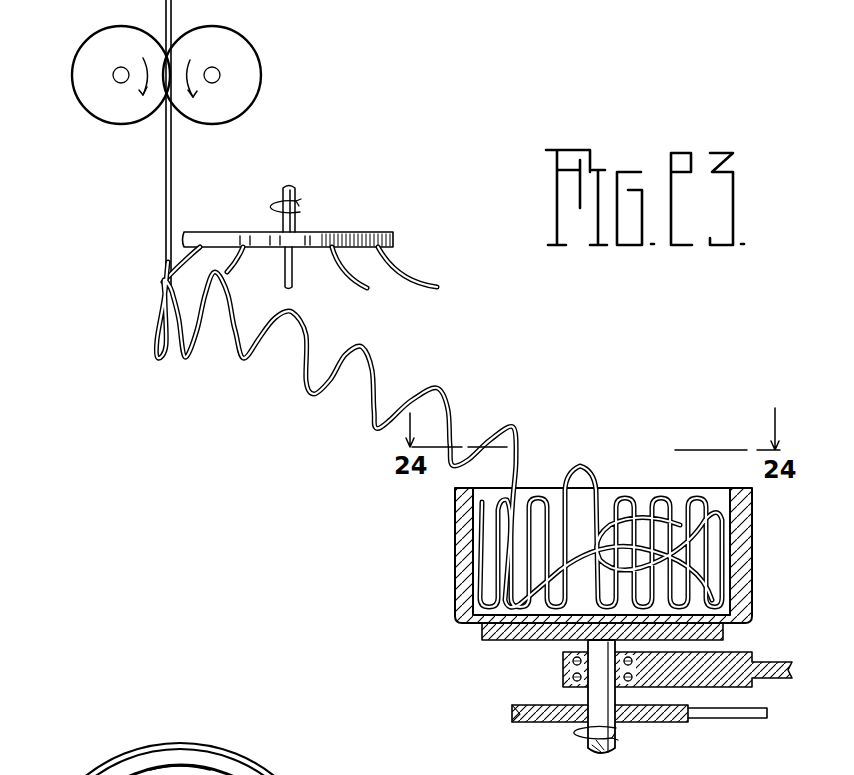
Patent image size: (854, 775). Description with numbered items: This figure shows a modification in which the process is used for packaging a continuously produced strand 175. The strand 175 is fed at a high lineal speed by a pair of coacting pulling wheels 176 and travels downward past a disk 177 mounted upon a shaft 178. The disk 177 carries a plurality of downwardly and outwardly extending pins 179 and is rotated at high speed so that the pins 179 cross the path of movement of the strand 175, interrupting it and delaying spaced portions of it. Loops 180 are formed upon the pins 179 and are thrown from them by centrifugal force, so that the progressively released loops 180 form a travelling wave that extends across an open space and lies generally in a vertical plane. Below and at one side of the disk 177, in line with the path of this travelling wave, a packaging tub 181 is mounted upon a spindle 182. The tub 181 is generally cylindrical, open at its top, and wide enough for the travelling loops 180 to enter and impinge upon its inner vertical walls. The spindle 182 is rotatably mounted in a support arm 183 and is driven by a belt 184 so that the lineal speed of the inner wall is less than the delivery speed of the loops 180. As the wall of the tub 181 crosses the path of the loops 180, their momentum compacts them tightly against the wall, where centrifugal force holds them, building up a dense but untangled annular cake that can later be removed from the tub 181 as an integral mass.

The continuously produced strand 175 is at (172, 25).
The coacting pulling wheels 176 is at (259, 95).
The disk 177 is at (362, 235).
The shaft 178 is at (296, 192).
The pins 179 is at (142, 281).
The loops 180 is at (194, 364).
The packaging tub 181 is at (752, 576).
The spindle 182 is at (586, 742).
The support arm 183 is at (735, 656).
The belt 184 is at (728, 718).